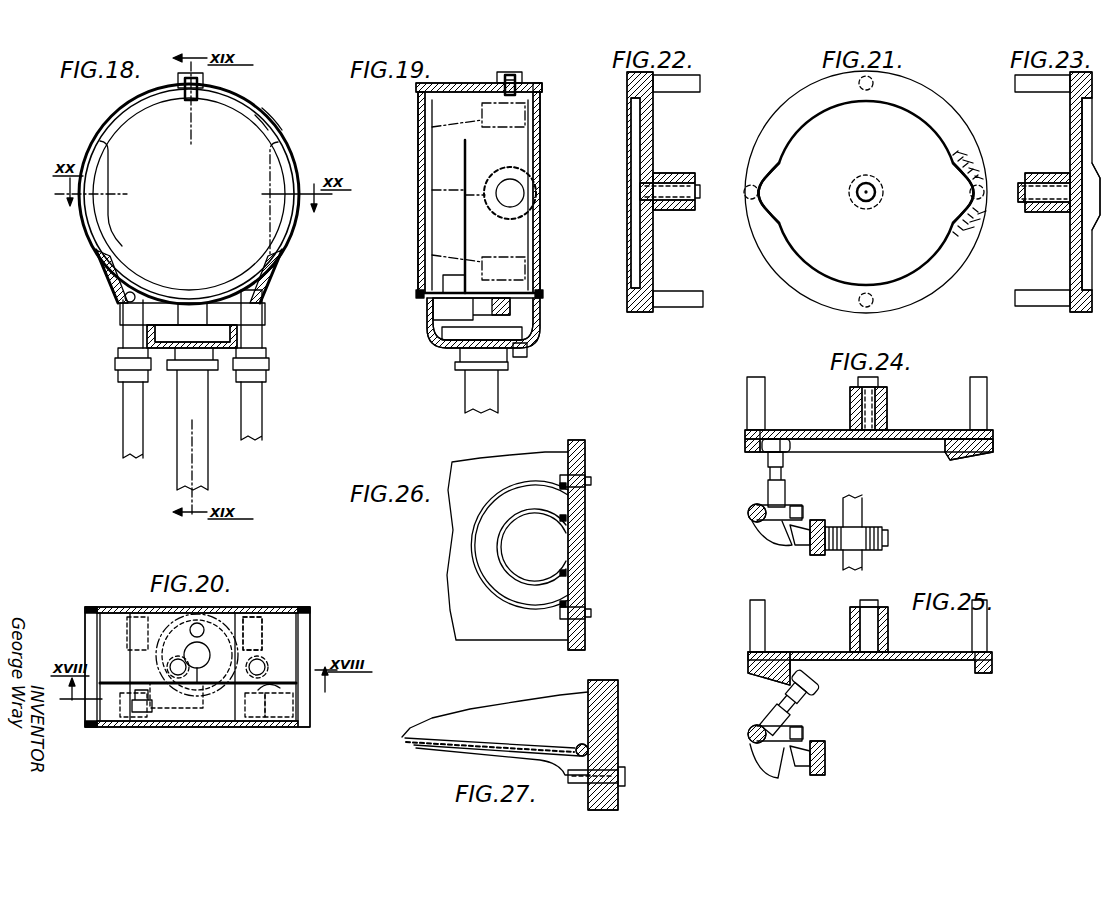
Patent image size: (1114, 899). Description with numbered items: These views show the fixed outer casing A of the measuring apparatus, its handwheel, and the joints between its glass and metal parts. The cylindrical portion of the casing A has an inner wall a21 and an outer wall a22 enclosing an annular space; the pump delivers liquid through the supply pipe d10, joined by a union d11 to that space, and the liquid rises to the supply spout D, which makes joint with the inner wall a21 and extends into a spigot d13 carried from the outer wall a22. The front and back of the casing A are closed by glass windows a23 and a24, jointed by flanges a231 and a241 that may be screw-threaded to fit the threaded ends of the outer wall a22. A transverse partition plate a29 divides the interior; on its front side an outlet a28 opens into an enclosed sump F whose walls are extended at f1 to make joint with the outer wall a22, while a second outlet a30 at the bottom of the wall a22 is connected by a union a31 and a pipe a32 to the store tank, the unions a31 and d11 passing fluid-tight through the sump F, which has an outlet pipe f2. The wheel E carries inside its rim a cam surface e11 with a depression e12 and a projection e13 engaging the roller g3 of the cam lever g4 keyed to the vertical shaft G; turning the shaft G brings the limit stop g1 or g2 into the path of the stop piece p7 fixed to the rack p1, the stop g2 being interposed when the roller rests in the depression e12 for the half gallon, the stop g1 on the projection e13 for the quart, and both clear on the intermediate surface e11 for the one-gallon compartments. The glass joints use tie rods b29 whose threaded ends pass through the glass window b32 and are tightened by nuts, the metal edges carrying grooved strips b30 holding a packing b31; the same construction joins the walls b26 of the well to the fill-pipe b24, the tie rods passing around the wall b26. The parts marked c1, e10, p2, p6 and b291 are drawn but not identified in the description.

In FIG. 18, the casing A is at (100, 124).
In FIG. 19, the casing A is at (418, 95).
In FIG. 20, the casing A is at (97, 638).
In FIG. 18, the supply spout D is at (187, 100).
In FIG. 19, the supply spout D is at (524, 80).
In FIG. 22, the wheel E is at (643, 145).
In FIG. 21, the wheel E is at (835, 230).
In FIG. 23, the wheel E is at (1070, 238).
In FIG. 24, the wheel E is at (915, 430).
In FIG. 25, the wheel E is at (925, 660).
In FIG. 18, the sump F is at (175, 334).
In FIG. 19, the sump F is at (440, 316).
In FIG. 24, the vertical shaft G is at (748, 512).
In FIG. 25, the vertical shaft G is at (748, 735).
In FIG. 18, the inner wall a21 is at (262, 123).
In FIG. 19, the inner wall a21 is at (456, 95).
In FIG. 20, the inner wall a21 is at (298, 696).
In FIG. 18, the outer wall a22 is at (272, 118).
In FIG. 19, the outer wall a22 is at (452, 88).
In FIG. 20, the outer wall a22 is at (86, 713).
In FIG. 19, the glass window a23 is at (540, 196).
In FIG. 20, the glass window a23 is at (97, 607).
In FIG. 19, the flange a231 is at (543, 88).
In FIG. 20, the flange a231 is at (300, 606).
In FIG. 19, the glass window a24 is at (418, 207).
In FIG. 20, the glass window a24 is at (252, 726).
In FIG. 19, the flange a241 is at (416, 297).
In FIG. 20, the flange a241 is at (95, 728).
In FIG. 18, the outlet a28 is at (195, 313).
In FIG. 19, the outlet a28 is at (500, 308).
In FIG. 20, the outlet a28 is at (202, 650).
In FIG. 18, the transverse partition plate a29 is at (108, 176).
In FIG. 19, the transverse partition plate a29 is at (467, 152).
In FIG. 20, the transverse partition plate a29 is at (212, 690).
In FIG. 18, the second outlet a30 is at (125, 300).
In FIG. 19, the second outlet a30 is at (457, 288).
In FIG. 20, the second outlet a30 is at (145, 700).
In FIG. 18, the union a31 is at (118, 352).
In FIG. 18, the pipe a32 is at (130, 418).
In FIG. 20, the pipe a32 is at (172, 660).
In FIG. 18, the outlet pipe c1 is at (193, 470).
In FIG. 19, the outlet pipe c1 is at (480, 393).
In FIG. 18, the supply pipe d10 is at (262, 418).
In FIG. 20, the supply pipe d10 is at (285, 690).
In FIG. 18, the union d11 is at (266, 351).
In FIG. 18, the spigot d13 is at (204, 79).
In FIG. 19, the spigot d13 is at (512, 75).
In FIG. 18, the sump wall extension f1 is at (100, 283).
In FIG. 19, the outlet pipe f2 is at (524, 358).
In FIG. 20, the outlet pipe f2 is at (185, 653).
In FIG. 22, the indicator tab e10 is at (684, 93).
In FIG. 21, the indicator tab e10 is at (873, 84).
In FIG. 23, the indicator tab e10 is at (1030, 90).
In FIG. 24, the indicator tab e10 is at (747, 397).
In FIG. 25, the indicator tab e10 is at (750, 607).
In FIG. 22, the cam surface e11 is at (631, 102).
In FIG. 21, the cam surface e11 is at (917, 115).
In FIG. 23, the cam surface e11 is at (1072, 122).
In FIG. 21, the depression e12 is at (766, 195).
In FIG. 24, the depression e12 is at (750, 443).
In FIG. 21, the projection e13 is at (957, 190).
In FIG. 23, the projection e13 is at (1098, 178).
In FIG. 24, the projection e13 is at (950, 460).
In FIG. 25, the projection e13 is at (770, 680).
In FIG. 24, the limit stop g1 is at (795, 506).
In FIG. 25, the limit stop g1 is at (796, 748).
In FIG. 24, the limit stop g2 is at (775, 530).
In FIG. 25, the limit stop g2 is at (765, 765).
In FIG. 24, the roller g3 is at (773, 439).
In FIG. 25, the roller g3 is at (805, 676).
In FIG. 24, the cam lever g4 is at (768, 472).
In FIG. 25, the cam lever g4 is at (798, 712).
In FIG. 24, the rack p1 is at (818, 555).
In FIG. 25, the rack p1 is at (828, 758).
In FIG. 24, the pinion gear p2 is at (888, 537).
In FIG. 24, the gear shaft p6 is at (852, 505).
In FIG. 24, the stop piece p7 is at (805, 545).
In FIG. 25, the stop piece p7 is at (805, 770).
In FIG. 26, the fill-pipe b24 is at (522, 518).
In FIG. 26, the well wall b26 is at (497, 595).
In FIG. 27, the tie rod b29 is at (540, 759).
In FIG. 26, the clamp ring (b29') b291 is at (480, 506).
In FIG. 27, the grooved strip b30 is at (577, 745).
In FIG. 27, the packing b31 is at (600, 752).
In FIG. 26, the glass window b32 is at (586, 552).
In FIG. 27, the glass window b32 is at (605, 680).